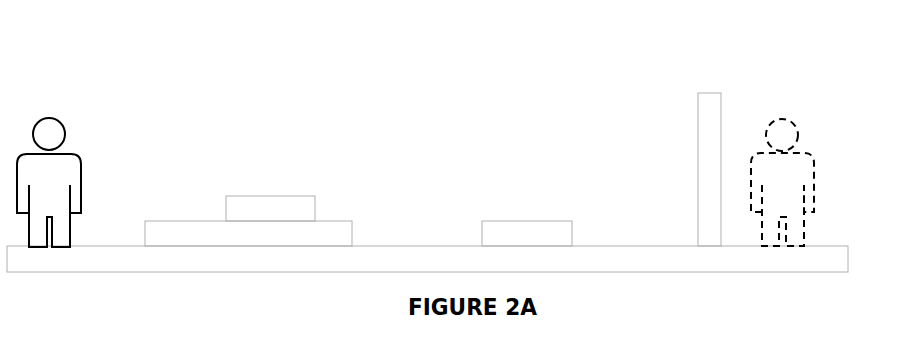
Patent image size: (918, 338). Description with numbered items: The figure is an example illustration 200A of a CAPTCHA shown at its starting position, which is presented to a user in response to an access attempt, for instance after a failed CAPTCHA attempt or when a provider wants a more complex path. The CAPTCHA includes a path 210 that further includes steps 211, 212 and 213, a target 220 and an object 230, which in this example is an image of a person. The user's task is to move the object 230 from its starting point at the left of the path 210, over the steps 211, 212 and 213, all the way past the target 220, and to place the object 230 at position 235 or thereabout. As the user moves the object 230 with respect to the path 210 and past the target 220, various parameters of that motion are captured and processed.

The illustration 200A is at (110, 48).
The path 210 is at (652, 246).
The step 211 is at (185, 221).
The step 212 is at (265, 196).
The step 213 is at (518, 221).
The target 220 is at (698, 147).
The object 230 is at (81, 190).
The position 235 is at (814, 190).